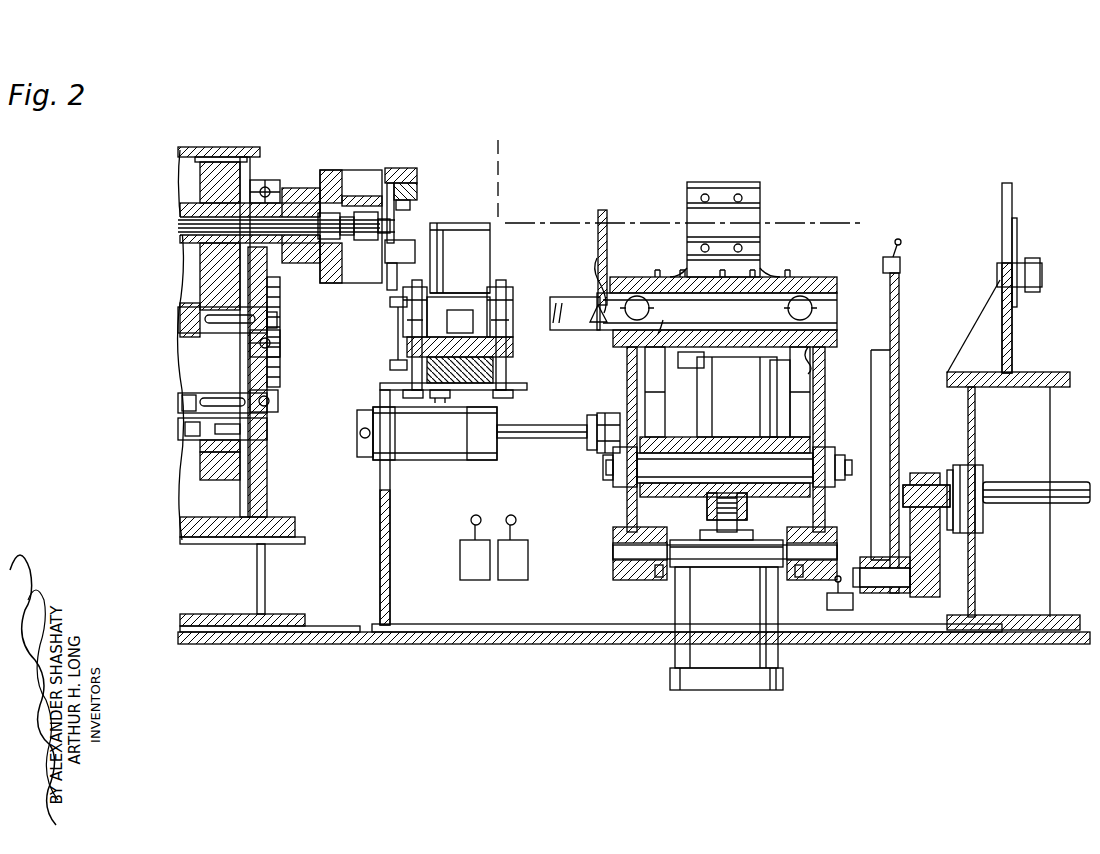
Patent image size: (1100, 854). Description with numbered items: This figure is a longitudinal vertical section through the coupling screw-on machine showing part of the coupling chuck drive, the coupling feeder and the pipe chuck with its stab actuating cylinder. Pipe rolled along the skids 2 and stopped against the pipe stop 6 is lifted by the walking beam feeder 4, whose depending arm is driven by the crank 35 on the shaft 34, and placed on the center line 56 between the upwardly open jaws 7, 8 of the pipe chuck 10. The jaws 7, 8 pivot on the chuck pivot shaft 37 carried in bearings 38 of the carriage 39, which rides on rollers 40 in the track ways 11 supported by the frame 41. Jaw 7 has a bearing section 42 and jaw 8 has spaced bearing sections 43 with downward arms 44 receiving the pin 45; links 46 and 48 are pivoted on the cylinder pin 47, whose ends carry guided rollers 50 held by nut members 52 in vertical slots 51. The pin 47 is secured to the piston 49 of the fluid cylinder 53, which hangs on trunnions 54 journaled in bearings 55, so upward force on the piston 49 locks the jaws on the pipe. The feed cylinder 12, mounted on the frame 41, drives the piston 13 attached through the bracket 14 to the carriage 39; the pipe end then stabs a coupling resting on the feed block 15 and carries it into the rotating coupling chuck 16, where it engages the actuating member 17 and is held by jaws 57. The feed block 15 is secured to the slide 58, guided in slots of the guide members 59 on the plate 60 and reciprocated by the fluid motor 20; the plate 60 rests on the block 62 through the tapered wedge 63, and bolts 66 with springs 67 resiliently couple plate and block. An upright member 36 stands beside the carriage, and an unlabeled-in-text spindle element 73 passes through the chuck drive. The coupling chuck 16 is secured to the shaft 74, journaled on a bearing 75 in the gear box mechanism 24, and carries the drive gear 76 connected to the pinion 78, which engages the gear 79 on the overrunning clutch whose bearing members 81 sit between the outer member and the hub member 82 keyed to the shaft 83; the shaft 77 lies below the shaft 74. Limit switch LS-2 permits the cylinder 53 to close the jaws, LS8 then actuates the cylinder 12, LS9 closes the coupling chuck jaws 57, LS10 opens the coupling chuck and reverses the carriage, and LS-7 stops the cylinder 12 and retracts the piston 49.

The skids 2 is at (1002, 205).
The walking beam feeder 4 is at (900, 318).
The pipe stop 6 is at (500, 152).
The jaw 7 is at (758, 191).
The jaw 8 is at (778, 350).
The pipe chuck 10 is at (771, 278).
The track ways 11 is at (574, 313).
The feed cylinder 12 is at (430, 438).
The piston 13 is at (528, 437).
The bracket 14 is at (596, 420).
The feed block 15 is at (490, 237).
The coupling chuck 16 is at (396, 168).
The actuating member 17 is at (418, 218).
The fluid motor 20 is at (440, 321).
The gear box mechanism 24 is at (270, 370).
The shaft 34 is at (1013, 500).
The crank 35 is at (935, 548).
The bracket 36 is at (900, 441).
The chuck pivot shaft 37 is at (748, 311).
The bearing 38 is at (620, 277).
The frame or carriage 39 is at (821, 352).
The roller 40 is at (588, 293).
The frame 41 is at (521, 390).
The bearing section 42 is at (681, 316).
The spaced bearing sections 43 is at (718, 308).
The arm 44 is at (806, 381).
The pin 45 is at (816, 399).
The link 46 is at (752, 405).
The cylinder pin 47 is at (743, 470).
The link 48 is at (803, 437).
The piston 49 is at (738, 522).
The guided roller 50 is at (821, 452).
The vertical slot 51 is at (827, 340).
The nut member 52 is at (620, 478).
The fluid cylinder 53 is at (736, 614).
The trunnion 54 is at (659, 577).
The bearing 55 is at (613, 548).
The center line 56 is at (585, 222).
The jaw 57 is at (417, 195).
The slide 58 is at (474, 292).
The guide member 59 is at (415, 294).
The plate 60 is at (410, 342).
The block 62 is at (498, 364).
The tapered wedge 63 is at (410, 357).
The bolt 66 is at (449, 392).
The spring 67 is at (410, 398).
The spindle 73 is at (196, 222).
The shaft 74 is at (200, 244).
The bearing 75 is at (265, 192).
The drive gear 76 is at (200, 181).
The shaft 77 is at (208, 318).
The pinion 78 is at (213, 298).
The gear 79 is at (203, 472).
The bearing member 81 is at (200, 445).
The hub member 82 is at (200, 424).
The shaft 83 is at (188, 402).
The limit switch LS-2 is at (900, 263).
The limit switch LS-7 is at (855, 601).
The limit switch LS8 is at (691, 360).
The limit switch LS9 is at (528, 566).
The limit switch LS10 is at (460, 566).